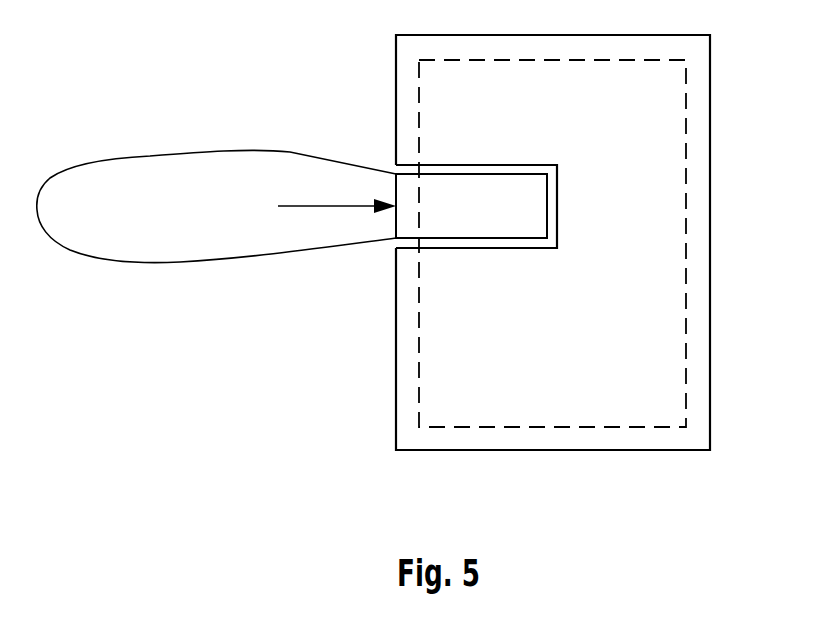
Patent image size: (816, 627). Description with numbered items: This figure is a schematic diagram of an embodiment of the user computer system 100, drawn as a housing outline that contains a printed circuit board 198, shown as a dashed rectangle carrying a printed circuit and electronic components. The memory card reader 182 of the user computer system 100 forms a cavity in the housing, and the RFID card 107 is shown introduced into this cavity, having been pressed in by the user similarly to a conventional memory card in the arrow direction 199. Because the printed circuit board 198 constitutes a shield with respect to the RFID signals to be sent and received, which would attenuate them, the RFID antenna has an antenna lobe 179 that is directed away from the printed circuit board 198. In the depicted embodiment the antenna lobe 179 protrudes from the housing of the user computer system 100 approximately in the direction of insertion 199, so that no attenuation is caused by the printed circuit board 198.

The user computer system 100 is at (712, 58).
The printed circuit board 198 is at (687, 156).
The memory card reader 182 is at (498, 165).
The RFID card 107 is at (498, 222).
The antenna lobe 179 is at (148, 156).
The arrow direction 199 is at (312, 204).